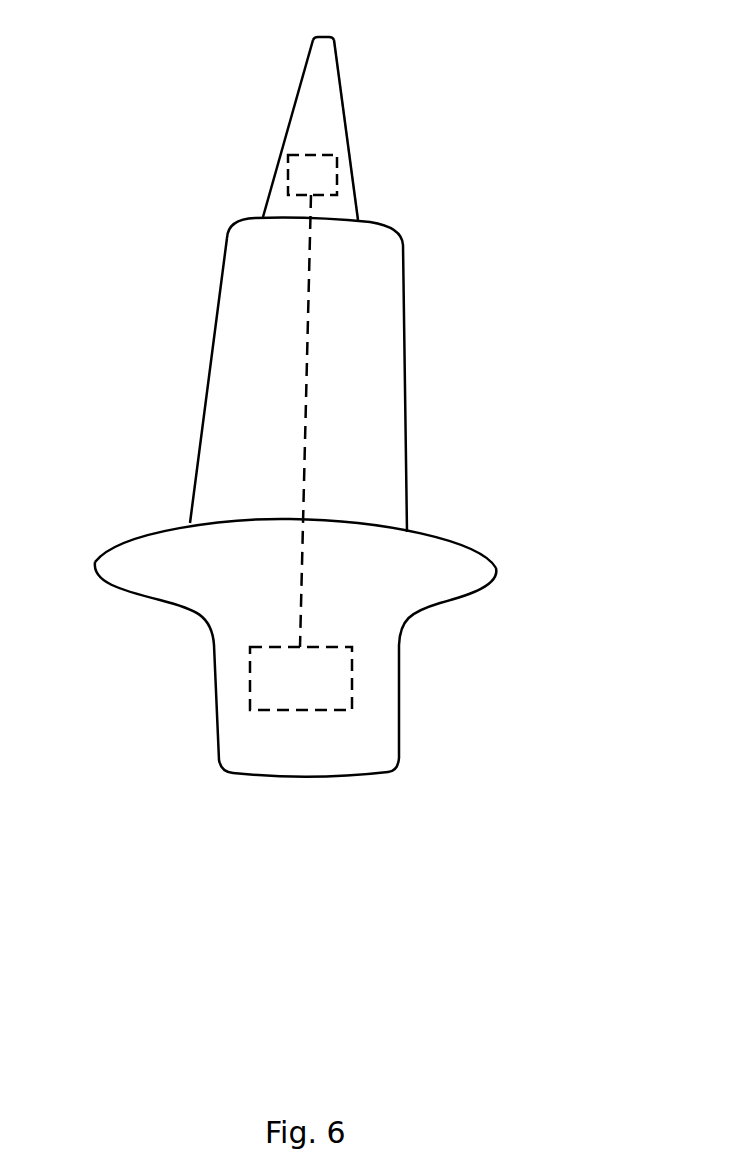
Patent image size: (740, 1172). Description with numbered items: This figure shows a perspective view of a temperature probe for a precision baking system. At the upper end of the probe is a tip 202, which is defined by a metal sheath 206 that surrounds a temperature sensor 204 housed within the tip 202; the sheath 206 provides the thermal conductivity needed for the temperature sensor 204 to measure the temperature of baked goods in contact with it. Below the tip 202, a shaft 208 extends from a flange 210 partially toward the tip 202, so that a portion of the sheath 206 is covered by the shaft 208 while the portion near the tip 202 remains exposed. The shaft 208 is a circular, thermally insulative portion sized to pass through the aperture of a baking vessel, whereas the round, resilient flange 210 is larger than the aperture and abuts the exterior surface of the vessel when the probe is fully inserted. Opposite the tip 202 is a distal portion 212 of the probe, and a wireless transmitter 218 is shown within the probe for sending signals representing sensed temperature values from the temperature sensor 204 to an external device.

The tip 202 is at (313, 47).
The temperature sensor 204 is at (335, 173).
The metal sheath 206 is at (285, 133).
The shaft 208 is at (252, 357).
The flange 210 is at (463, 578).
The distal portion 212 is at (282, 747).
The wireless transmitter 218 is at (353, 680).